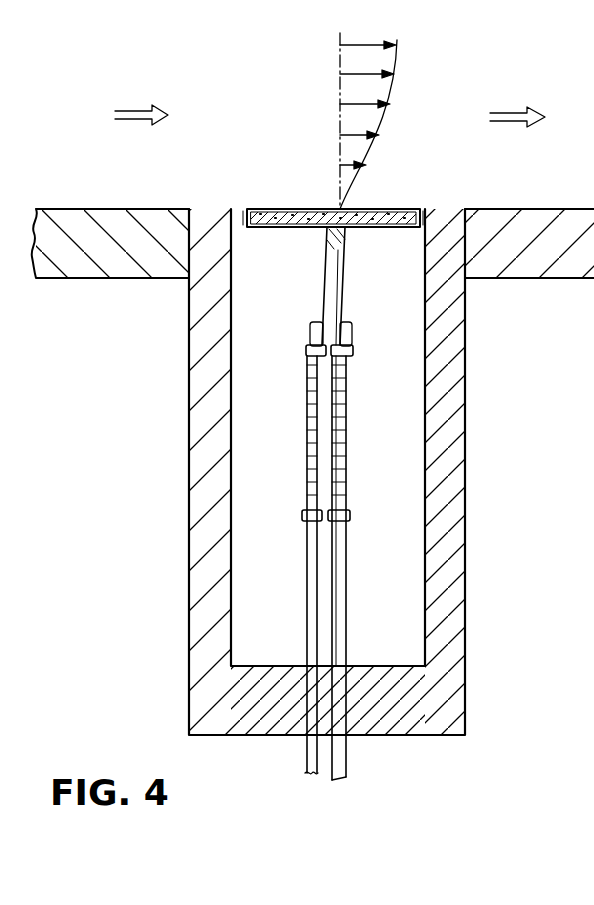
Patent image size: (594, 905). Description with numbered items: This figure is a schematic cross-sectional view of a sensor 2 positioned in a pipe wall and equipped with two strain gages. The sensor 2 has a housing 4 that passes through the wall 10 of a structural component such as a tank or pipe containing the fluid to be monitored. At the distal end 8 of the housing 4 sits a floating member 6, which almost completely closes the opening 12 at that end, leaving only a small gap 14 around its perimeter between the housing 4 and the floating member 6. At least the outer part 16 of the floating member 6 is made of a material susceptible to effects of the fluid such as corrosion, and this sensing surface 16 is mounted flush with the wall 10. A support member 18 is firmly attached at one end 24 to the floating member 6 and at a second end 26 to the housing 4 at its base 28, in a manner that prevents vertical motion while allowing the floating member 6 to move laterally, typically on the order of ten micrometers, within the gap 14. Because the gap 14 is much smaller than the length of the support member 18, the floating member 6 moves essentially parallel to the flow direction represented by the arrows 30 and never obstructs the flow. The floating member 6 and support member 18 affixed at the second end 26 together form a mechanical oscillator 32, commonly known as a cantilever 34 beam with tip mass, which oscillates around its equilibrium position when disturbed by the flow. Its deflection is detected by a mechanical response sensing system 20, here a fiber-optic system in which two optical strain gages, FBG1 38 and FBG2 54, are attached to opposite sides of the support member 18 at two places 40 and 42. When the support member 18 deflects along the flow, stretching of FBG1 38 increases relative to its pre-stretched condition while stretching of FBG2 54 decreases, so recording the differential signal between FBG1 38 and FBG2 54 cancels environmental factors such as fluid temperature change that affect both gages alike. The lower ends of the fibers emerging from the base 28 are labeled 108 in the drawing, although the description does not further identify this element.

The sensor 2 is at (140, 626).
The housing 4 is at (189, 445).
The floating member 6 is at (277, 228).
The distal end 8 is at (210, 208).
The wall 10 is at (95, 208).
The opening 12 is at (243, 232).
The gap 14 is at (241, 208).
The outer part 16 is at (301, 208).
The support member 18 is at (328, 461).
The mechanical response sensing system 20 is at (302, 549).
The one end 24 is at (347, 232).
The second end 26 is at (327, 657).
The base 28 is at (455, 697).
The arrows 30 is at (342, 104).
The mechanical oscillator 32 is at (386, 196).
The cantilever 34 is at (419, 163).
The optical Fiber Bragg Grating strain gage 38 is at (305, 440).
The attachment place 40 is at (305, 351).
The attachment place 42 is at (302, 515).
The second optical strain gage 54 is at (347, 393).
The tube ends 108 is at (304, 762).